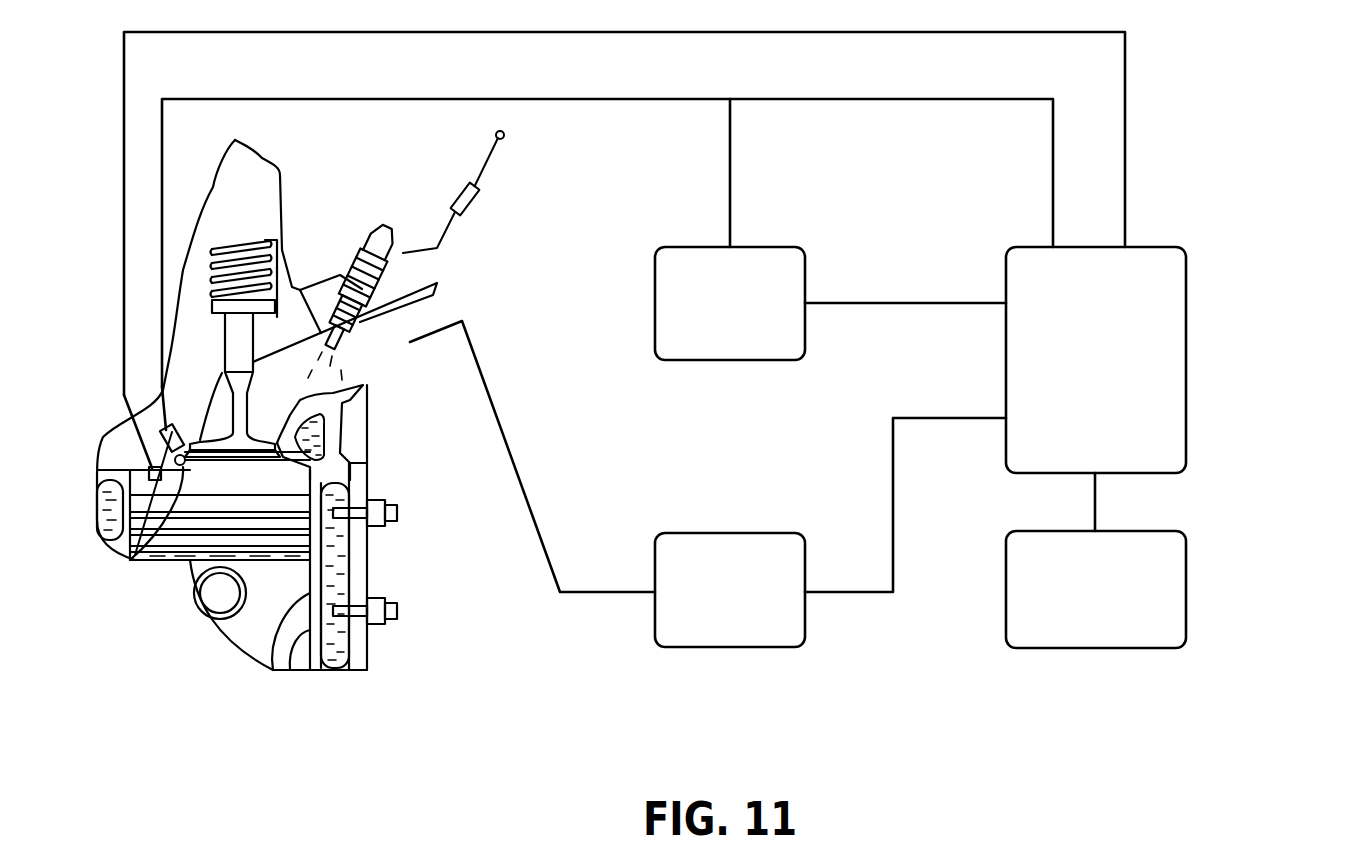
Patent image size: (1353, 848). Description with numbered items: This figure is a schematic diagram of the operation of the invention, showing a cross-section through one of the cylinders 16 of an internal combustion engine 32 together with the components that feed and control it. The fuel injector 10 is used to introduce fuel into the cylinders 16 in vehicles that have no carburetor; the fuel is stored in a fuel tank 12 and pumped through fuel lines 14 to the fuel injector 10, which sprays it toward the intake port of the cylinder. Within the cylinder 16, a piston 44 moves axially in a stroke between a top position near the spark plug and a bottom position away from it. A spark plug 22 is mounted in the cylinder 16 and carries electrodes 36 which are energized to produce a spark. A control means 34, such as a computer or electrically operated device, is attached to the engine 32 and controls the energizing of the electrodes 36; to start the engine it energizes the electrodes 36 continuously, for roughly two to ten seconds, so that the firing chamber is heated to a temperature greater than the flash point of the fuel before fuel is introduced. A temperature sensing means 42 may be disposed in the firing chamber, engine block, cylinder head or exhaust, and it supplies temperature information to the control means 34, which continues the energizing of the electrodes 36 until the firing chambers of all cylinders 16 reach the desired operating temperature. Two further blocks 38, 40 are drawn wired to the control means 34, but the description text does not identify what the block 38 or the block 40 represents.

The fuel injector 10 is at (365, 237).
The fuel tank 12 is at (760, 648).
The fuel lines 14 is at (517, 467).
The cylinders 16 is at (287, 650).
The spark plugs 22 is at (163, 430).
The internal combustion engine 32 is at (365, 548).
The control means 34 is at (1186, 368).
The electrodes 36 is at (135, 555).
The module 38 is at (1108, 650).
The module 40 is at (690, 362).
The temperature sensing means 42 is at (150, 463).
The piston 44 is at (185, 560).